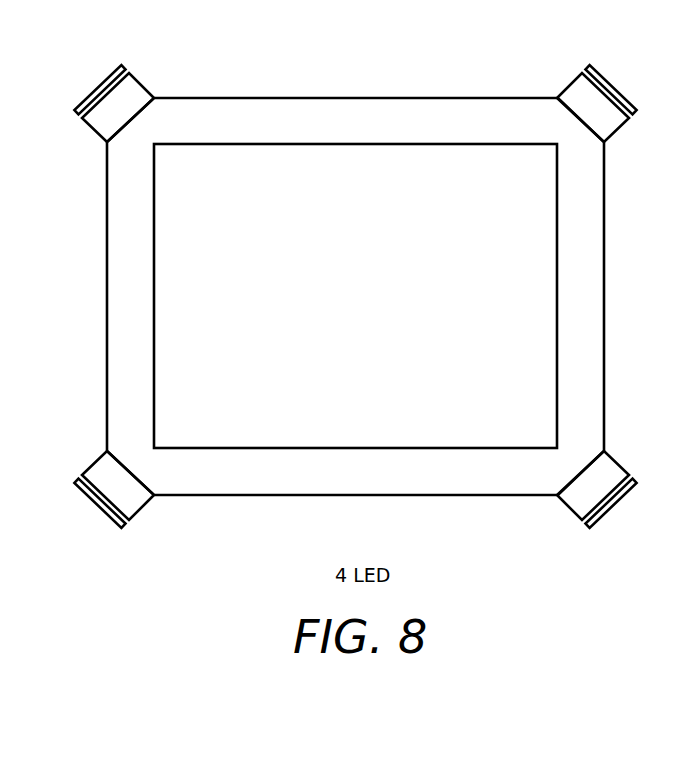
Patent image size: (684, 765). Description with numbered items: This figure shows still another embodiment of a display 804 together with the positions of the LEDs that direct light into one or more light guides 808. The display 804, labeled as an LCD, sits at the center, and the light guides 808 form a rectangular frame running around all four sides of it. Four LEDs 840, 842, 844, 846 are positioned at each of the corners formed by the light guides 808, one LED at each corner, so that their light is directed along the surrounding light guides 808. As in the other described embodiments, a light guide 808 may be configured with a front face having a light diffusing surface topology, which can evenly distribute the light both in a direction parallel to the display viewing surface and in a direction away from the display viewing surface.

The display 804 is at (319, 185).
The light guide 808 is at (117, 315).
The LED 840 is at (98, 83).
The LED 842 is at (613, 83).
The LED 844 is at (613, 510).
The LED 846 is at (98, 510).